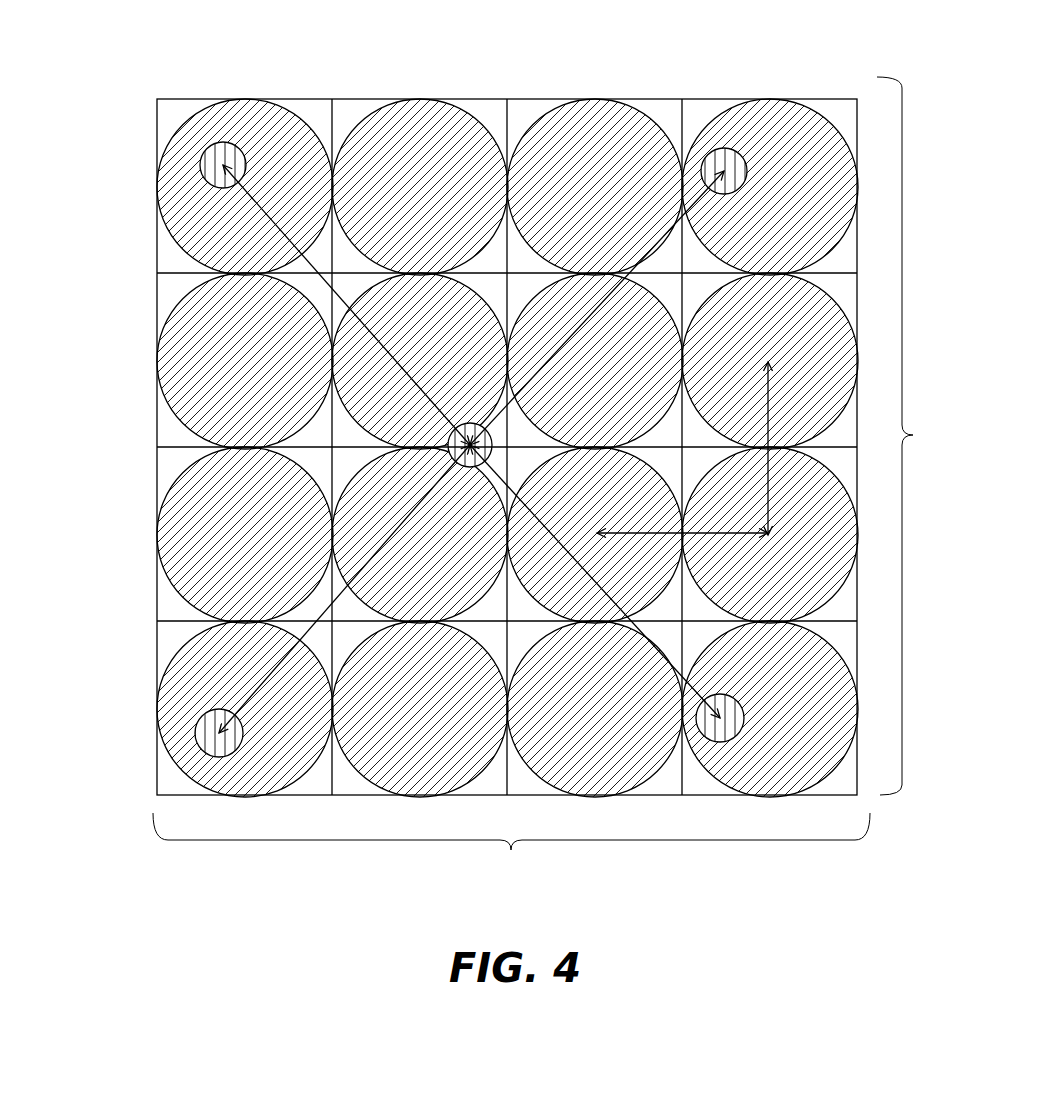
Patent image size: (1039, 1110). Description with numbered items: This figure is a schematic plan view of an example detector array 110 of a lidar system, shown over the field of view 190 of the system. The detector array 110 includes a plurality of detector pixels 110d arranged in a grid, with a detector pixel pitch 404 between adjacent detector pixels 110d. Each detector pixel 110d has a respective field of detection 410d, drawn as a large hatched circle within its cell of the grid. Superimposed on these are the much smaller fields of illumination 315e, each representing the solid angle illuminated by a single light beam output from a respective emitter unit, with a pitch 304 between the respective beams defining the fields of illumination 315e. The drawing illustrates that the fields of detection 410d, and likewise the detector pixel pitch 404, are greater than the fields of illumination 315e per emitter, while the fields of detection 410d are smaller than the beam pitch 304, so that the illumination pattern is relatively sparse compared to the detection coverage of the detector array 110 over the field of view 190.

The field of detection 410d is at (767, 110).
The field of illumination 315e is at (449, 451).
The detector pixel 110d is at (835, 108).
The pitch 304 is at (471, 449).
The detector pixel pitch 404 is at (706, 459).
The detector array 110 is at (911, 436).
The field of view 190 is at (511, 857).